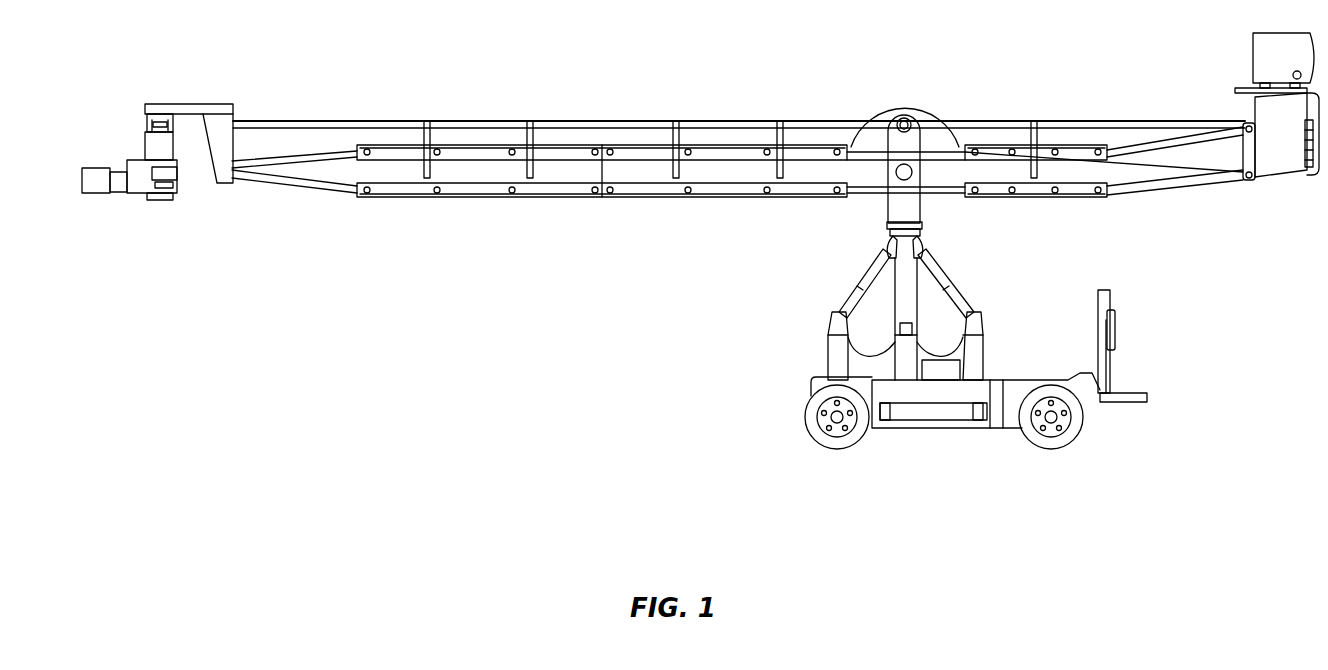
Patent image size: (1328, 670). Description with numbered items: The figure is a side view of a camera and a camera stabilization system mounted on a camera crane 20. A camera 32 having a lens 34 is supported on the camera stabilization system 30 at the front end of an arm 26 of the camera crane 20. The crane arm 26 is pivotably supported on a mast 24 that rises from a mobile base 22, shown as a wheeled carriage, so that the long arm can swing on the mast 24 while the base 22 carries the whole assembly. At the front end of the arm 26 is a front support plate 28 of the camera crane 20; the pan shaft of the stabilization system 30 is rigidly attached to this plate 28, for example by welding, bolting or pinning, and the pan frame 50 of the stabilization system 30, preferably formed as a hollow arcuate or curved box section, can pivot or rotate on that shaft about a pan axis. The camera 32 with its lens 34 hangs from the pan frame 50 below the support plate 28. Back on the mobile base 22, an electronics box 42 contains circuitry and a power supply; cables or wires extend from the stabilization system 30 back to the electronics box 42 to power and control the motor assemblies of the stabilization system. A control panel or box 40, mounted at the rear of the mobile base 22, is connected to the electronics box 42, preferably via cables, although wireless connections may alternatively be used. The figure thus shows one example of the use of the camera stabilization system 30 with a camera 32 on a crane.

The camera crane 20 is at (982, 103).
The mobile base 22 is at (915, 408).
The mast 24 is at (907, 278).
The arm 26 is at (742, 173).
The front support plate 28 is at (173, 105).
The camera stabilization system 30 is at (104, 153).
The camera 32 is at (138, 192).
The lens 34 is at (88, 182).
The control panel or box 40 is at (1110, 297).
The electronics box 42 is at (950, 367).
The pan frame 50 is at (155, 145).